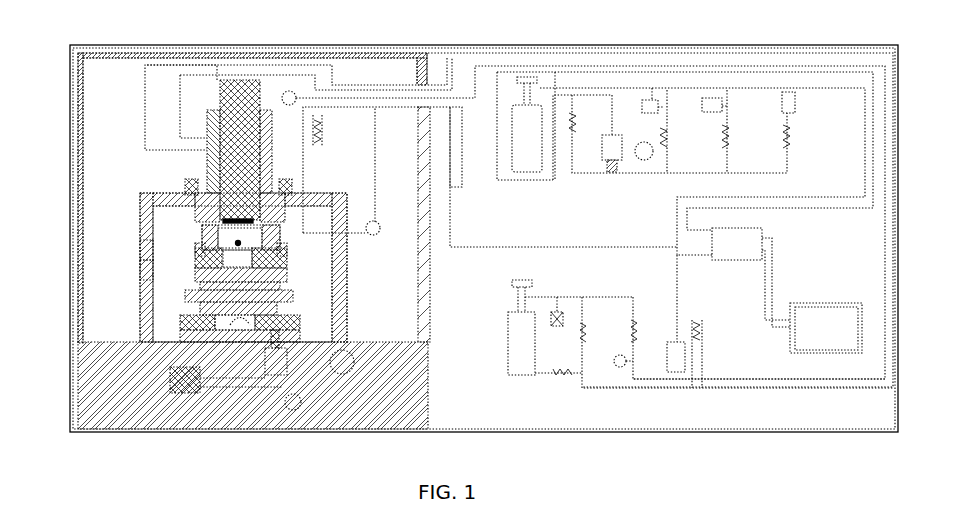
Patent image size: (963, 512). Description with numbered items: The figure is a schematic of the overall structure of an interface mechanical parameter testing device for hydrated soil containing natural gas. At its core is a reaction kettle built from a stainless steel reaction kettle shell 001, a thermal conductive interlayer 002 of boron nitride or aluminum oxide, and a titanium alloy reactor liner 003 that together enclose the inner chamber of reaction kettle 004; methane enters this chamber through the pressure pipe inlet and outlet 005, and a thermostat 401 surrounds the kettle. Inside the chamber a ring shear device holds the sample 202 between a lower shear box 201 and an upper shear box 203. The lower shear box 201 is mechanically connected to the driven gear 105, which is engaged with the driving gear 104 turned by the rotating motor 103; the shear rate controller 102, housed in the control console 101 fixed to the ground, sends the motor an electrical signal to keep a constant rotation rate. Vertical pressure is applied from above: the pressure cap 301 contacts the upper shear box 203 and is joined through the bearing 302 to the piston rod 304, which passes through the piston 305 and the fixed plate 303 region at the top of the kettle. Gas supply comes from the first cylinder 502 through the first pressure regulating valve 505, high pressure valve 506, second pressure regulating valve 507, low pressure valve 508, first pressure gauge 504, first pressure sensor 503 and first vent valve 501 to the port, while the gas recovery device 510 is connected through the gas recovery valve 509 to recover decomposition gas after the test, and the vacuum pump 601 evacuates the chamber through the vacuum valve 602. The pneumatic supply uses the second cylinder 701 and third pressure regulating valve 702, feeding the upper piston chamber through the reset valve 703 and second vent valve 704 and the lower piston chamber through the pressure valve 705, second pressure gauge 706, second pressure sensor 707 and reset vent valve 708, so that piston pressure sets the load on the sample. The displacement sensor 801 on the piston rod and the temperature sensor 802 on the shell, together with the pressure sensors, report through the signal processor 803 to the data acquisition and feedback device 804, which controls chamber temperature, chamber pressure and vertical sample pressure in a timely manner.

The reaction kettle shell 001 is at (150, 270).
The thermal conductive interlayer 002 is at (150, 252).
The reactor liner 003 is at (153, 218).
The inner chamber of reaction kettle 004 is at (315, 278).
The pressure pipe inlet and outlet 005 is at (300, 205).
The control console 101 is at (85, 370).
The shear rate controller 102 is at (185, 395).
The rotating motor 103 is at (282, 372).
The driving gear 104 is at (287, 323).
The driven gear 105 is at (193, 323).
The lower shear box 201 is at (197, 273).
The sample 202 is at (197, 259).
The upper shear box 203 is at (199, 248).
The pressure cap 301 is at (210, 227).
The bearing 302 is at (253, 221).
The fixed plate 303 is at (243, 243).
The piston rod 304 is at (227, 154).
The piston 305 is at (207, 147).
The thermostat 401 is at (81, 152).
The first vent valve 501 is at (322, 132).
The first cylinder 502 is at (530, 128).
The first pressure sensor 503 is at (610, 165).
The first pressure gauge 504 is at (645, 160).
The first pressure regulating valve 505 is at (645, 103).
The high pressure valve 506 is at (665, 133).
The second pressure regulating valve 507 is at (705, 101).
The low pressure valve 508 is at (727, 140).
The gas recovery valve 509 is at (792, 138).
The gas recovery device 510 is at (790, 100).
The vacuum pump 601 is at (573, 104).
The vacuum valve 602 is at (578, 125).
The second cylinder 701 is at (517, 340).
The third pressure regulating valve 702 is at (553, 323).
The reset valve 703 is at (590, 336).
The second vent valve 704 is at (560, 374).
The pressure valve 705 is at (640, 341).
The second pressure gauge 706 is at (620, 368).
The second pressure sensor 707 is at (680, 364).
The reset vent valve 708 is at (701, 334).
The displacement sensor 801 is at (289, 91).
The temperature sensor 802 is at (380, 227).
The signal processor 803 is at (736, 254).
The data acquisition and feedback device 804 is at (830, 326).